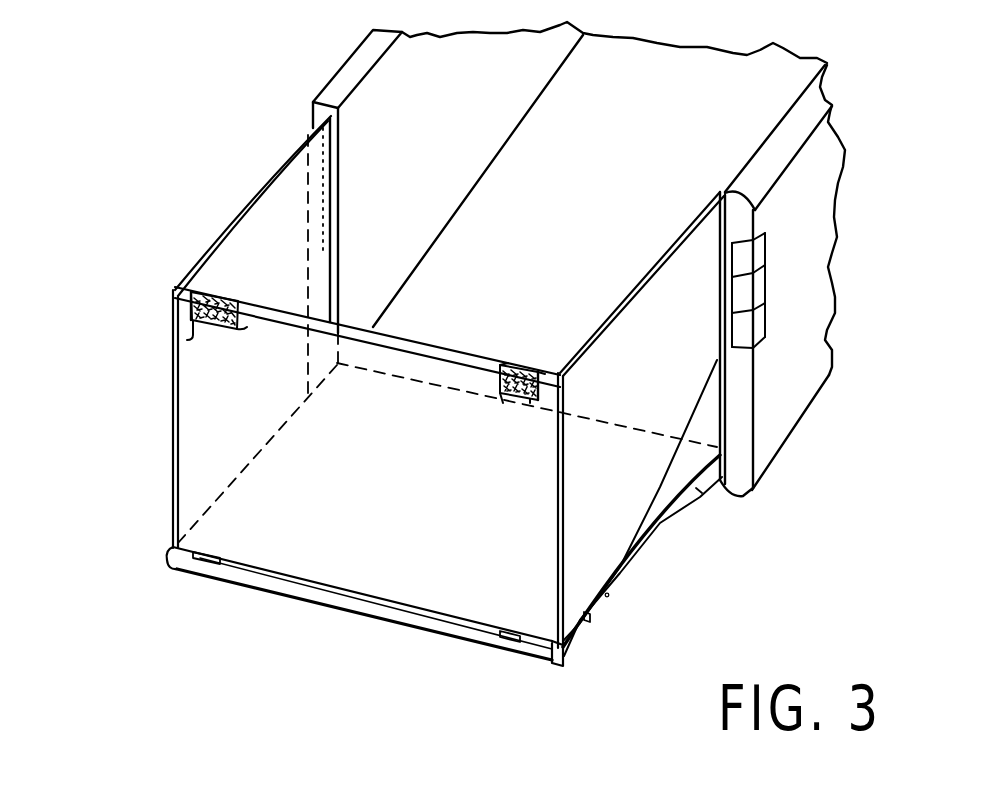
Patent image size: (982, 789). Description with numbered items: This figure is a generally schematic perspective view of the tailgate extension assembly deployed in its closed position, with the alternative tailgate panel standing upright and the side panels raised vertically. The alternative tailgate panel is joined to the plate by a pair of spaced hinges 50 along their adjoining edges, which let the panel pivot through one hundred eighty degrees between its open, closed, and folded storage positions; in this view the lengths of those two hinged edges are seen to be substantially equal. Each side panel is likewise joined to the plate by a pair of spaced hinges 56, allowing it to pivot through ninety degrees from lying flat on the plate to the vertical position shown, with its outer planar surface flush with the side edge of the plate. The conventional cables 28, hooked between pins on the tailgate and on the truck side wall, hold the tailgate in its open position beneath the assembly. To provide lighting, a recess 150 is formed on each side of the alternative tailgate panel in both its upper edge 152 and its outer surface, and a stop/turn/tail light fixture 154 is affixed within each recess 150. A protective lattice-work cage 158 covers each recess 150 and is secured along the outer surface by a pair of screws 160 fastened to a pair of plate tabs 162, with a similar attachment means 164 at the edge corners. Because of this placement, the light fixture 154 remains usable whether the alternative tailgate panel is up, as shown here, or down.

The cables 28 is at (658, 487).
The hinges 50 is at (203, 565).
The hinges 56 is at (700, 490).
The recess 150 is at (193, 318).
The upper edge 152 is at (435, 352).
The stop/turn/tail light fixture 154 is at (212, 292).
The protective lattice-work cage 158 is at (232, 292).
The screws 160 is at (530, 403).
The plate tabs 162 is at (193, 340).
The attachment means 164 is at (508, 363).